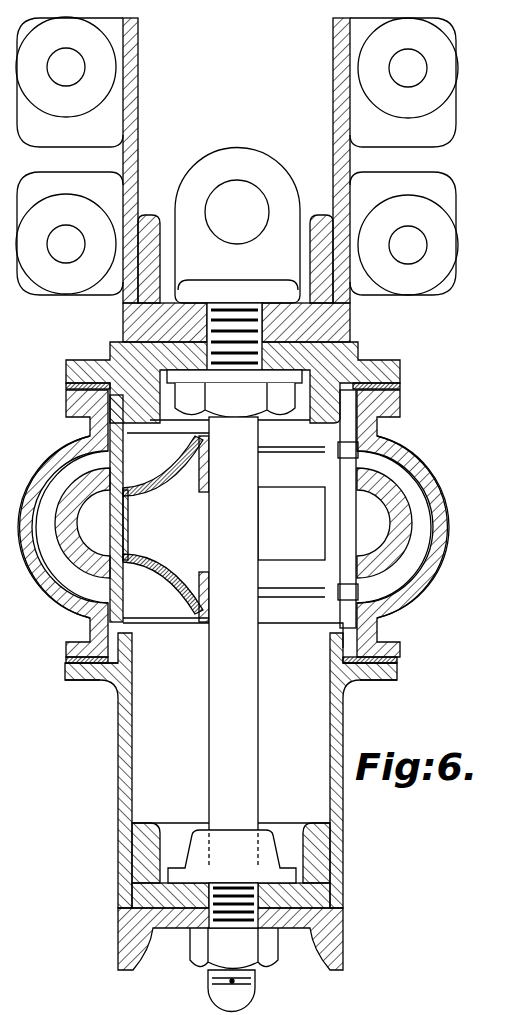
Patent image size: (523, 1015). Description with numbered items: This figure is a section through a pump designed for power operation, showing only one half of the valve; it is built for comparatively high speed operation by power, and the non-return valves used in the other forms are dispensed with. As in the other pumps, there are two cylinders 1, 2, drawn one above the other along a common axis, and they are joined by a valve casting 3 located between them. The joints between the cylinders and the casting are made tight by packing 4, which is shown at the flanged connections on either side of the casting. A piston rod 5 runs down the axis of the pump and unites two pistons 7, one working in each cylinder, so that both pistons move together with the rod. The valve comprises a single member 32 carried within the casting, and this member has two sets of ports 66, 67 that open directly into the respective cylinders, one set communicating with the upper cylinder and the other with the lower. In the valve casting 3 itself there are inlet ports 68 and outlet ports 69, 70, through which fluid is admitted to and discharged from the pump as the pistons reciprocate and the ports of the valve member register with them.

The cylinder 1 is at (122, 748).
The cylinder 2 is at (335, 48).
The valve casting 3 is at (400, 600).
The packing 4 is at (80, 680).
The piston rod 5 is at (215, 695).
The piston 7 is at (320, 425).
The valve member 32 is at (166, 529).
The ports 66 is at (150, 545).
The ports 67 is at (155, 507).
The inlet ports 68 is at (233, 523).
The outlet port 69 is at (95, 590).
The outlet port 70 is at (100, 452).